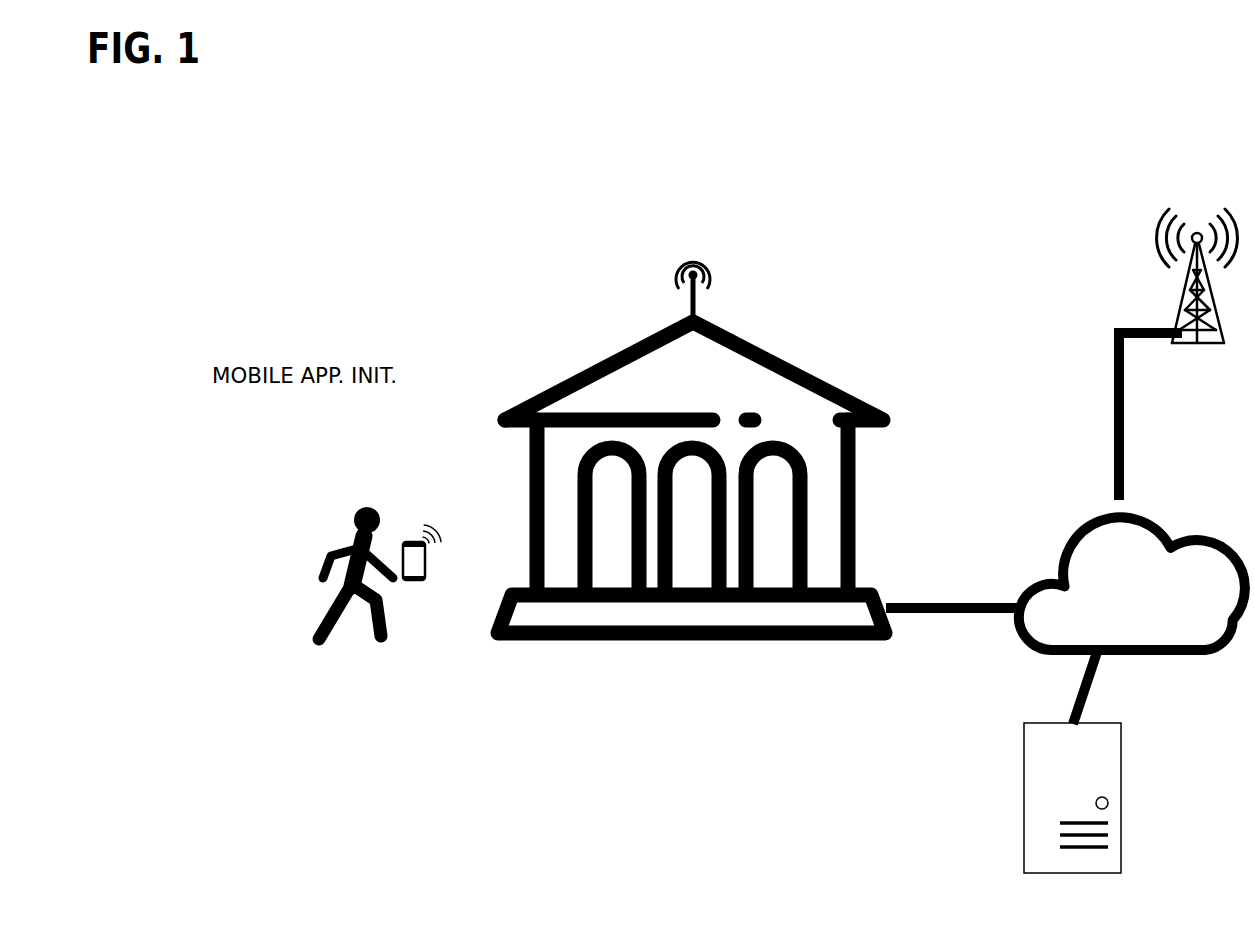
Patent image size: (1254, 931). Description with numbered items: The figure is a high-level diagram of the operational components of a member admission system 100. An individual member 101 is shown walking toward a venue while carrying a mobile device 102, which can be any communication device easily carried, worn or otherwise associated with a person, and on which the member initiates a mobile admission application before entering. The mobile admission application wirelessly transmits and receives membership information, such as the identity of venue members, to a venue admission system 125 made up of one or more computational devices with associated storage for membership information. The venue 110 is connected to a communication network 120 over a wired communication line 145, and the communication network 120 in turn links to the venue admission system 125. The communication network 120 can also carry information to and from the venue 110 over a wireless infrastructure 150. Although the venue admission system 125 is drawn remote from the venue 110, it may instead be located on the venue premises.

The member admission system 100 is at (771, 446).
The individual member 101 is at (345, 571).
The mobile device 102 is at (433, 541).
The venue 110 is at (605, 345).
The communication network 120 is at (1132, 583).
The venue admission system 125 is at (1128, 817).
The wired communication line 145 is at (988, 603).
The wireless infrastructure 150 is at (1222, 198).